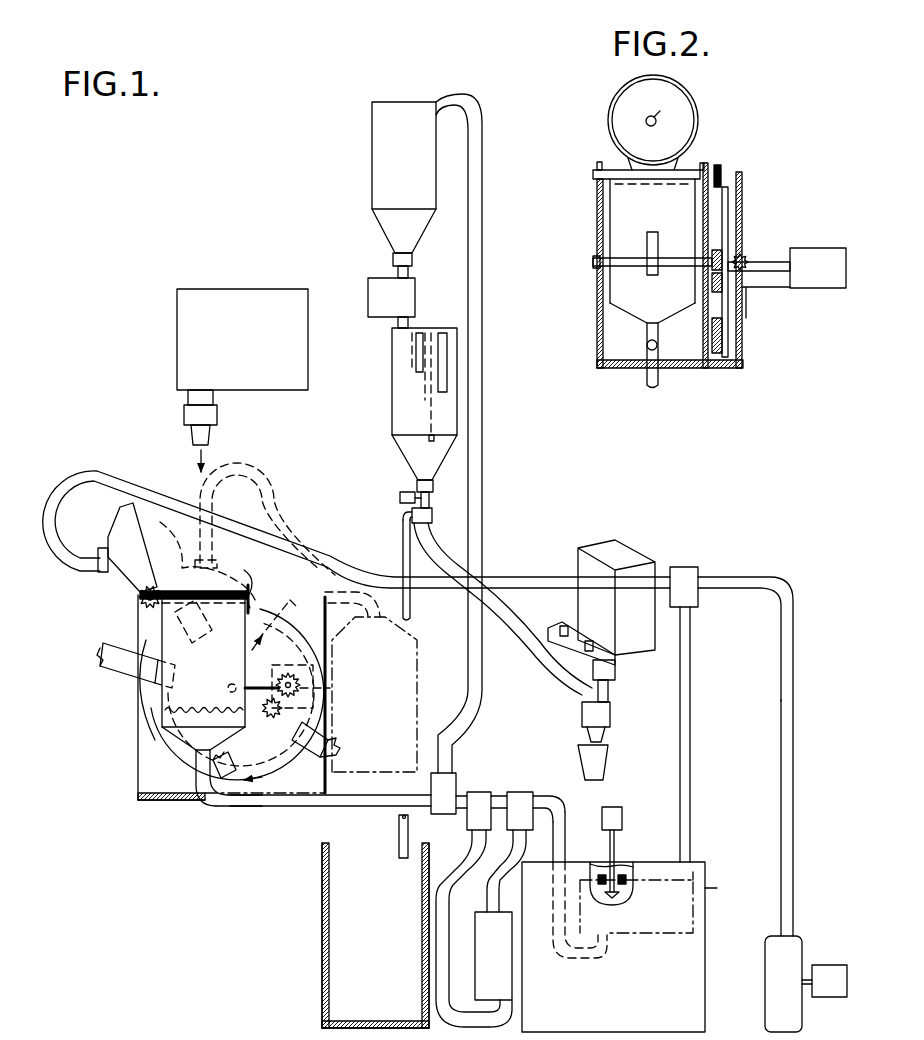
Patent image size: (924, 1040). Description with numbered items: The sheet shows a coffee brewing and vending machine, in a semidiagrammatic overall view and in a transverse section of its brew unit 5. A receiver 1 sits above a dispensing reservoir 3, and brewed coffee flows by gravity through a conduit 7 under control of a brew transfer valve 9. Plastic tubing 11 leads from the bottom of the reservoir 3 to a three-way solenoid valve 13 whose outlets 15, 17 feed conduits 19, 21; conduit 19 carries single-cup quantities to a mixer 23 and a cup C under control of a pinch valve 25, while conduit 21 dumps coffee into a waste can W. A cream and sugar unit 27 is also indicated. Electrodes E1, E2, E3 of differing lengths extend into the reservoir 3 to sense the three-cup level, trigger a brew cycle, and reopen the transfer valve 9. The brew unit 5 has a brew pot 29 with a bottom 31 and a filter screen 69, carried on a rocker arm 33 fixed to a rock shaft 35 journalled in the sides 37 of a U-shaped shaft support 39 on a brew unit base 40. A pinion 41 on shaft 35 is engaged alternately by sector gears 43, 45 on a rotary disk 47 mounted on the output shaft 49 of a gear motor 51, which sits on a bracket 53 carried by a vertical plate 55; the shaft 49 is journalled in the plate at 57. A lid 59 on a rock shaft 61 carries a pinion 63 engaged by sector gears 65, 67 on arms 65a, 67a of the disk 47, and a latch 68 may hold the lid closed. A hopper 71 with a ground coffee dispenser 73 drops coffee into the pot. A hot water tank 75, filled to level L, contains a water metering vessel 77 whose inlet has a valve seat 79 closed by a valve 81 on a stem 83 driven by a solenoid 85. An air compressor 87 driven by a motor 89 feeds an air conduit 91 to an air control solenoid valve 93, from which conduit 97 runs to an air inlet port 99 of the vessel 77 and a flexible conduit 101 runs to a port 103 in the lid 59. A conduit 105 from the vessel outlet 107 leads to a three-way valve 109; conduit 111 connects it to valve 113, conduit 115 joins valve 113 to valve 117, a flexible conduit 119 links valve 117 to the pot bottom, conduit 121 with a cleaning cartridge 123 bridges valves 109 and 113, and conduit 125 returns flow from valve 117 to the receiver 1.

In FIG. 1, the receiver 1 is at (372, 155).
In FIG. 1, the dispensing reservoir 3 is at (392, 386).
In FIG. 1, the brew unit 5 is at (132, 745).
In FIG. 1, the conduit 7 is at (409, 272).
In FIG. 1, the brew transfer valve 9 is at (415, 296).
In FIG. 1, the plastic tubing 11 is at (433, 489).
In FIG. 1, the three-way solenoid valve 13 is at (432, 514).
In FIG. 1, the outlet 15 is at (430, 532).
In FIG. 1, the outlet 17 is at (405, 517).
In FIG. 1, the conduit 19 is at (505, 616).
In FIG. 1, the conduit 21 is at (403, 547).
In FIG. 1, the mixer 23 is at (582, 718).
In FIG. 1, the pinch valve 25 is at (400, 497).
In FIG. 1, the cream and sugar unit 27 is at (618, 536).
In FIG. 1, the brew pot 29 is at (208, 670).
In FIG. 1, the bottom 31 is at (185, 752).
In FIG. 1, the rocker arm 33 is at (251, 606).
In FIG. 2, the rocker arm 33 is at (647, 240).
In FIG. 1, the rock shaft 35 is at (296, 683).
In FIG. 2, the rock shaft 35 is at (593, 261).
In FIG. 2, the sides 37 is at (600, 212).
In FIG. 1, the shaft support 39 is at (142, 794).
In FIG. 2, the shaft support 39 is at (666, 360).
In FIG. 1, the brew unit base 40 is at (150, 800).
In FIG. 2, the brew unit base 40 is at (610, 369).
In FIG. 1, the pinion 41 is at (300, 672).
In FIG. 2, the pinion 41 is at (712, 252).
In FIG. 1, the sector gear 43 is at (206, 806).
In FIG. 2, the sector gear 43 is at (718, 357).
In FIG. 1, the sector gear 45 is at (262, 722).
In FIG. 2, the sector gear 45 is at (712, 283).
In FIG. 1, the rotary disk 47 is at (262, 806).
In FIG. 2, the rotary disk 47 is at (728, 199).
In FIG. 1, the output shaft 49 is at (228, 693).
In FIG. 2, the output shaft 49 is at (778, 262).
In FIG. 2, the gear motor 51 is at (815, 248).
In FIG. 2, the bracket 53 is at (758, 289).
In FIG. 2, the vertical plate 55 is at (741, 173).
In FIG. 2, the journal 57 is at (742, 253).
In FIG. 1, the lid 59 is at (132, 523).
In FIG. 2, the lid 59 is at (698, 118).
In FIG. 1, the rock shaft 61 is at (140, 601).
In FIG. 2, the rock shaft 61 is at (594, 172).
In FIG. 1, the pinion 63 is at (146, 606).
In FIG. 2, the pinion 63 is at (718, 166).
In FIG. 1, the sector gear 65 is at (102, 652).
In FIG. 1, the arm 65a is at (106, 672).
In FIG. 1, the sector gear 67 is at (332, 748).
In FIG. 1, the arm 67a is at (334, 738).
In FIG. 1, the latch 68 is at (250, 580).
In FIG. 1, the filter screen 69 is at (165, 715).
In FIG. 1, the hopper 71 is at (252, 352).
In FIG. 1, the ground coffee dispenser 73 is at (184, 412).
In FIG. 1, the hot water tank 75 is at (706, 1003).
In FIG. 1, the water metering vessel 77 is at (694, 918).
In FIG. 1, the valve seat 79 is at (628, 880).
In FIG. 1, the valve 81 is at (626, 903).
In FIG. 1, the valve stem 83 is at (616, 850).
In FIG. 1, the solenoid 85 is at (622, 810).
In FIG. 1, the air compressor 87 is at (765, 962).
In FIG. 1, the electric motor 89 is at (830, 965).
In FIG. 1, the air conduit 91 is at (793, 766).
In FIG. 1, the air control solenoid valve 93 is at (698, 572).
In FIG. 1, the air conduit 97 is at (690, 722).
In FIG. 1, the air inlet port 99 is at (705, 886).
In FIG. 1, the air conduit 101 is at (96, 470).
In FIG. 1, the port 103 is at (100, 556).
In FIG. 2, the port 103 is at (654, 108).
In FIG. 1, the conduit 105 is at (564, 812).
In FIG. 1, the outlet 107 is at (612, 899).
In FIG. 1, the three-way solenoid valve 109 is at (534, 796).
In FIG. 1, the conduit 111 is at (502, 796).
In FIG. 1, the three-way solenoid valve 113 is at (480, 792).
In FIG. 1, the conduit 115 is at (462, 812).
In FIG. 1, the three-way solenoid valve 117 is at (431, 790).
In FIG. 1, the conduit 119 is at (304, 600).
In FIG. 1, the conduit 121 is at (450, 880).
In FIG. 1, the cartridge 123 is at (506, 964).
In FIG. 1, the conduit 125 is at (483, 112).
In FIG. 1, the cup C is at (608, 752).
In FIG. 1, the waste can W is at (322, 918).
In FIG. 1, the water level L is at (638, 864).
In FIG. 1, the electrode E1 is at (416, 347).
In FIG. 1, the electrode E2 is at (447, 365).
In FIG. 1, the electrode E3 is at (434, 408).